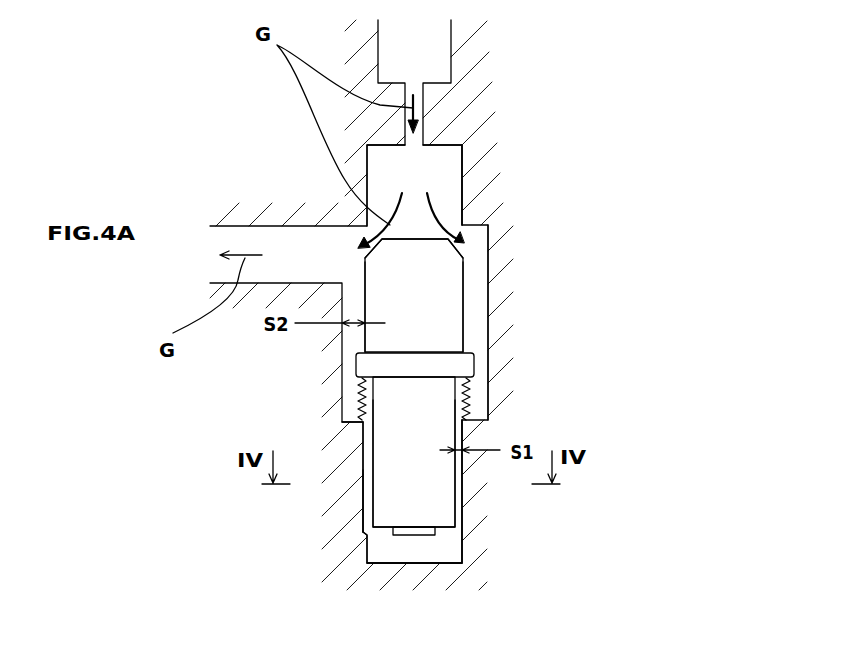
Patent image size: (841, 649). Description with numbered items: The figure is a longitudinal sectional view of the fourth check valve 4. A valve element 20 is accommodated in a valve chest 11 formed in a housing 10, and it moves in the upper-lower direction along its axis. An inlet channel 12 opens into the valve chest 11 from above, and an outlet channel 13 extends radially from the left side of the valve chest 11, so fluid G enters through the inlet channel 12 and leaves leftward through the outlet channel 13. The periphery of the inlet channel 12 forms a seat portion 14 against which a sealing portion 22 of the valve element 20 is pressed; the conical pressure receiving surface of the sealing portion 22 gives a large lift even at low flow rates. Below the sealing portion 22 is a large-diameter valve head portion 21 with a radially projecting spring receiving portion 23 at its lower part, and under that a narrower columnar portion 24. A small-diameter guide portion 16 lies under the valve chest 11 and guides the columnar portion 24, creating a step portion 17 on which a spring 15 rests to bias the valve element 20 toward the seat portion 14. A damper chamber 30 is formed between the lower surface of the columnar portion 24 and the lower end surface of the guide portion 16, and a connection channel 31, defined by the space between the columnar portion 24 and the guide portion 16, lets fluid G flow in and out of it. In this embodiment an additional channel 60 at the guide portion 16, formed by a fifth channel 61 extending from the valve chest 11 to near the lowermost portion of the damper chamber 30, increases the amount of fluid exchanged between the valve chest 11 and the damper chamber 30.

The fourth check valve 4 is at (607, 165).
The housing 10 is at (546, 360).
The valve chest 11 is at (475, 298).
The inlet channel 12 is at (430, 176).
The outlet channel 13 is at (293, 245).
The seat portion 14 is at (460, 226).
The spring 15 is at (488, 413).
The guide portion 16 is at (370, 565).
The step portion 17 is at (345, 402).
The valve element 20 is at (431, 495).
The valve head portion 21 is at (420, 315).
The sealing portion 22 is at (458, 252).
The spring receiving portion 23 is at (477, 390).
The columnar portion 24 is at (423, 472).
The damper chamber 30 is at (442, 552).
The connection channel 31 is at (463, 512).
The additional channel 60 is at (304, 523).
The fifth channel 61 is at (363, 504).